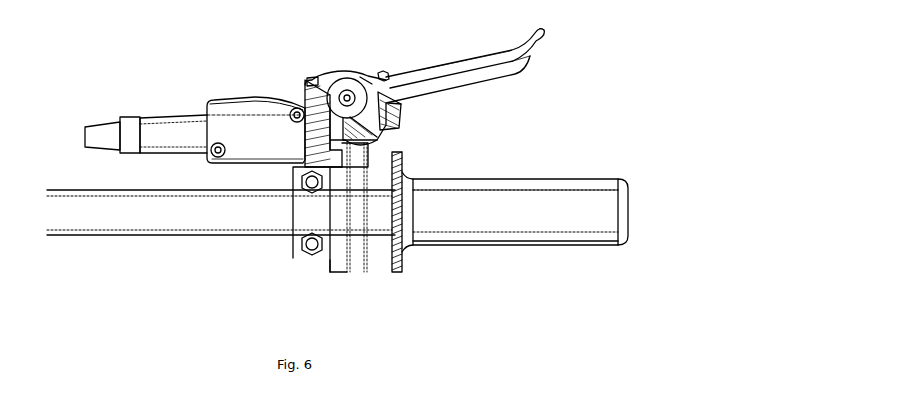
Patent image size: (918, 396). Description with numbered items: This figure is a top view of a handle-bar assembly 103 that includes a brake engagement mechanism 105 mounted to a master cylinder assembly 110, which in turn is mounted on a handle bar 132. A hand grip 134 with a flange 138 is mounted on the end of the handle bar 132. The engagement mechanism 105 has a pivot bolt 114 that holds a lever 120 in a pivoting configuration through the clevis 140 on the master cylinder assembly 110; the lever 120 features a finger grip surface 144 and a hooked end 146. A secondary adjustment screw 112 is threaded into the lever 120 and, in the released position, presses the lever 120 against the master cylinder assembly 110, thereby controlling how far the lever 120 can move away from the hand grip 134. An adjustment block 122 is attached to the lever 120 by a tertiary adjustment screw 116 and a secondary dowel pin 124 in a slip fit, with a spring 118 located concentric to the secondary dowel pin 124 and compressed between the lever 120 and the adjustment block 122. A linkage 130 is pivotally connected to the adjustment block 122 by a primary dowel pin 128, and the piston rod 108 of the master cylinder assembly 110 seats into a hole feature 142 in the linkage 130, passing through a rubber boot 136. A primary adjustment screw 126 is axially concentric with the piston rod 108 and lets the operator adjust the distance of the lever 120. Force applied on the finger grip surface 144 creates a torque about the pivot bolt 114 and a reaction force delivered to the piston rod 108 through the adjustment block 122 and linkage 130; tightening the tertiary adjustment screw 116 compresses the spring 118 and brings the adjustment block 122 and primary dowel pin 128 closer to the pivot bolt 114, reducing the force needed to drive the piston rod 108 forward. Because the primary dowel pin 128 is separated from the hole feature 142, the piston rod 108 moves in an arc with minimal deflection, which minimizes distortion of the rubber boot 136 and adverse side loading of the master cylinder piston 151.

The handle-bar assembly 103 is at (137, 92).
The engagement mechanism 105 is at (360, 72).
The piston rod 108 is at (290, 190).
The master cylinder assembly 110 is at (262, 100).
The secondary adjustment screw 112 is at (310, 78).
The pivot bolt 114 is at (338, 70).
The tertiary adjustment screw 116 is at (388, 76).
The spring 118 is at (413, 97).
The lever 120 is at (546, 35).
The adjustment block 122 is at (412, 102).
The secondary dowel pin 124 is at (392, 113).
The primary adjustment screw 126 is at (395, 127).
The primary dowel pin 128 is at (427, 193).
The linkage 130 is at (370, 240).
The handle bar 132 is at (150, 236).
The hand grip 134 is at (520, 240).
The rubber boot 136 is at (293, 232).
The flange 138 is at (405, 262).
The clevis 140 is at (343, 76).
The hole feature 142 is at (348, 240).
The finger grip surface 144 is at (477, 63).
The hooked end 146 is at (532, 60).
The master cylinder piston 151 is at (224, 165).